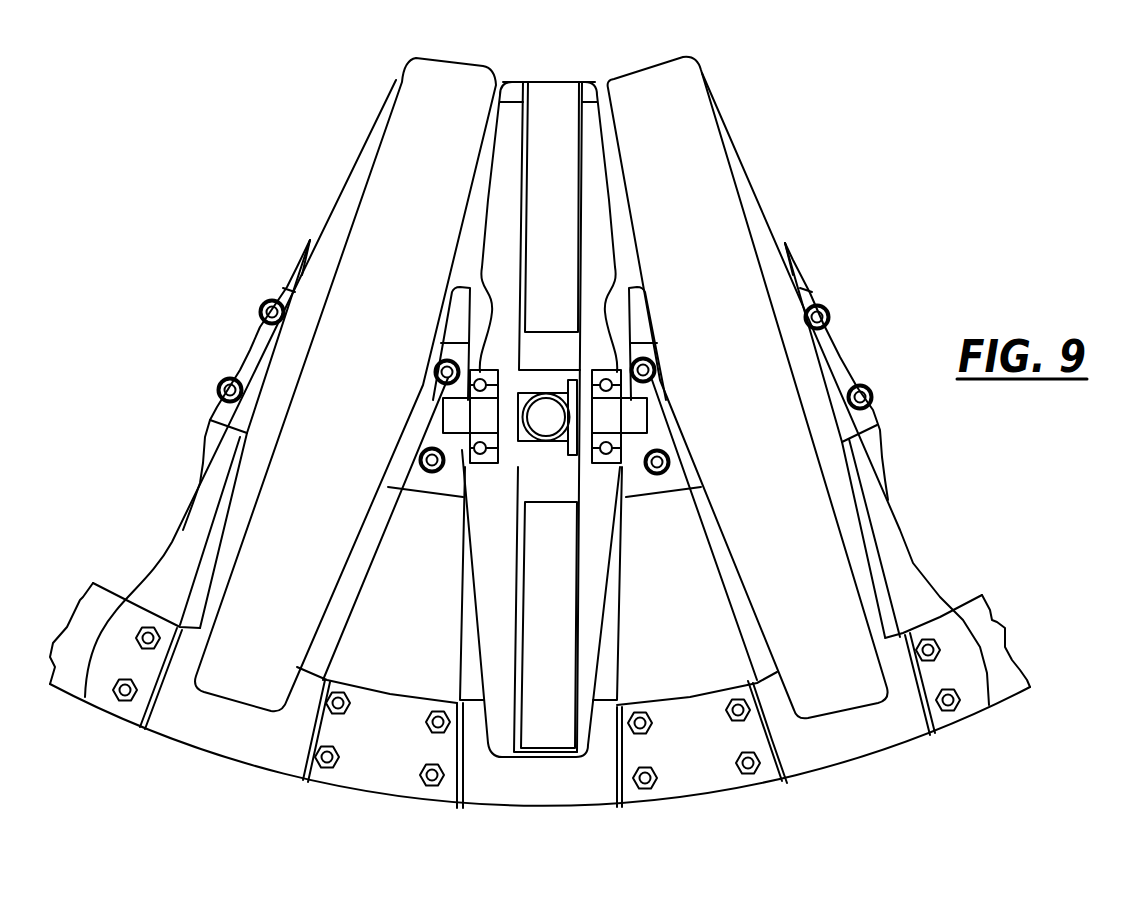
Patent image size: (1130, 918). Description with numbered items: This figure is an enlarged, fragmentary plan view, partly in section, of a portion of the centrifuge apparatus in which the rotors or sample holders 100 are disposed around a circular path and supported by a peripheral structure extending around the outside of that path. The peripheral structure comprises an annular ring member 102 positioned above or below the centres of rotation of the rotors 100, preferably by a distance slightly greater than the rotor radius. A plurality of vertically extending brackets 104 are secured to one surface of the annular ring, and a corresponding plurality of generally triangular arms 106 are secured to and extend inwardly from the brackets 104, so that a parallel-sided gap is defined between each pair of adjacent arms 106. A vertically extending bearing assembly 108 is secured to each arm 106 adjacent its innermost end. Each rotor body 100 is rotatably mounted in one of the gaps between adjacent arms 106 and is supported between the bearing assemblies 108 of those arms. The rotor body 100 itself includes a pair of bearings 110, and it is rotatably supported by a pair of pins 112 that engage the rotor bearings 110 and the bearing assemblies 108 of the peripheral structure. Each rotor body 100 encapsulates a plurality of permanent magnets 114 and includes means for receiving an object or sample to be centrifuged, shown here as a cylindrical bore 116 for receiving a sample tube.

The rotor body 100 is at (510, 84).
The annular ring member 102 is at (243, 740).
The vertically extending bracket 104 is at (383, 747).
The generally triangular arm 106 is at (410, 672).
The bearing assembly 108 is at (452, 483).
The rotor bearing 110 is at (481, 272).
The pin 112 is at (457, 420).
The permanent magnet 114 is at (553, 107).
The cylindrical bore 116 is at (553, 428).